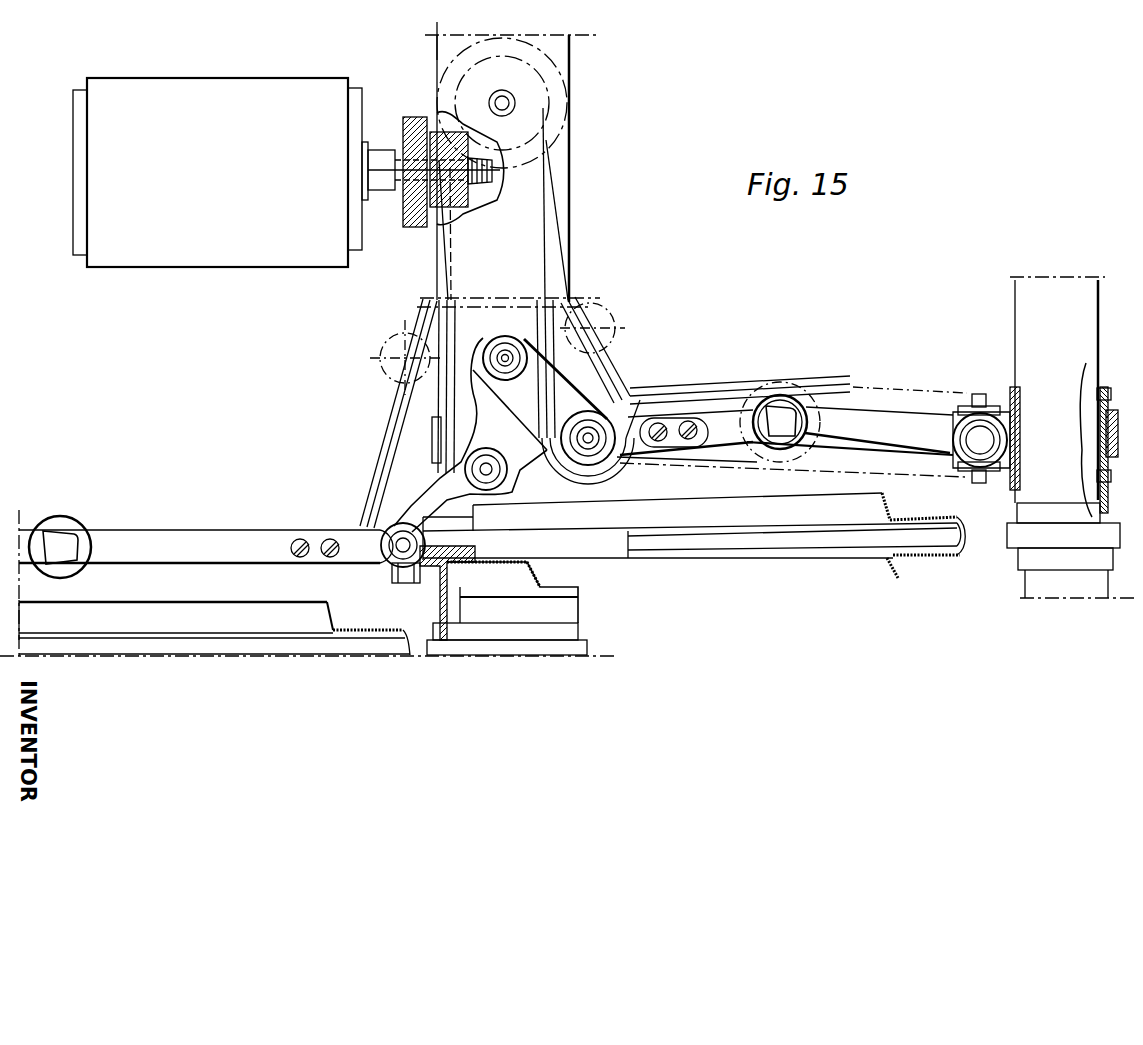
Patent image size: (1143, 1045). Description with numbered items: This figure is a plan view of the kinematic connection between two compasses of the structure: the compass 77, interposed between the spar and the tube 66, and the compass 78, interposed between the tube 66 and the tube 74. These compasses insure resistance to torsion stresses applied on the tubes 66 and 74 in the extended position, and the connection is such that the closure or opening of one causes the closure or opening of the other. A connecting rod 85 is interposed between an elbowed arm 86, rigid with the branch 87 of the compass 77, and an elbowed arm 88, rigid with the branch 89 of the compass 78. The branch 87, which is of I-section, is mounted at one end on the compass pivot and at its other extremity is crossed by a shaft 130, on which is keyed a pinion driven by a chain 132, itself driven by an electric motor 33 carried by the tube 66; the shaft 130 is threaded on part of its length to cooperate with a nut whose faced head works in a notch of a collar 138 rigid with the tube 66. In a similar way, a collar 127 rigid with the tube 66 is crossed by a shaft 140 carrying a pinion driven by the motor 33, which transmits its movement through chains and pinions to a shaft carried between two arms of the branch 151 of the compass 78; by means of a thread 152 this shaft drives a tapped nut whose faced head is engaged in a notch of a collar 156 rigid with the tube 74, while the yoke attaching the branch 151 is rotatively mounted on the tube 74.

The electric motor 33 is at (234, 172).
The tube 66 is at (437, 55).
The connecting rod 85 is at (480, 417).
The collar 127 is at (433, 430).
The chain 132 is at (393, 437).
The elbowed arm 86 is at (420, 502).
The shaft 130 is at (395, 540).
The collar 138 is at (432, 568).
The compass 77 is at (60, 530).
The branch 87 is at (233, 537).
The elbowed arm 88 is at (578, 395).
The branch 89 is at (712, 418).
The shaft 140 is at (600, 393).
The compass 78 is at (780, 404).
The branch 151 is at (873, 425).
The thread 152 is at (981, 428).
The tube 74 is at (1030, 330).
The collar 156 is at (1013, 473).